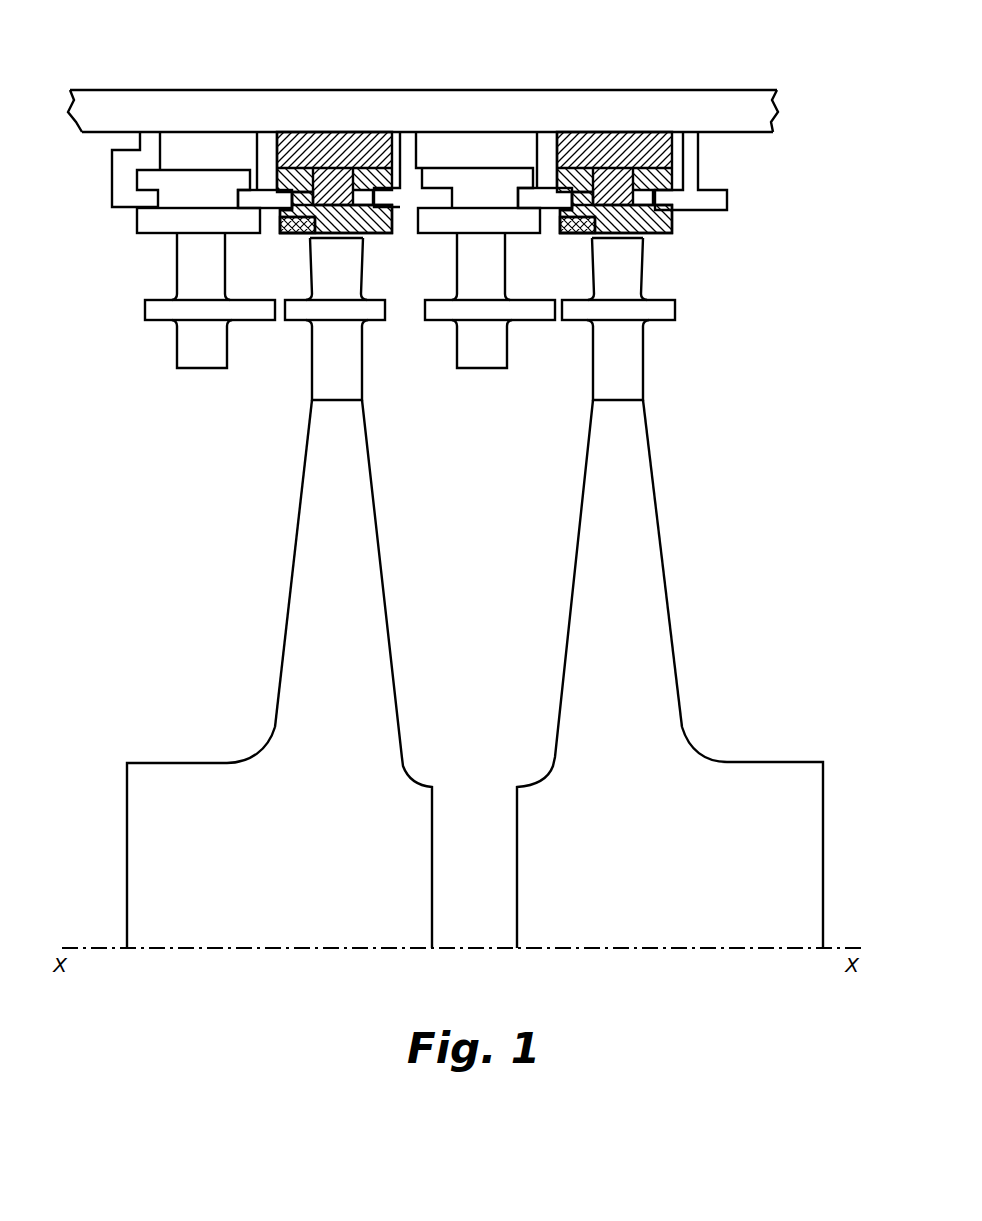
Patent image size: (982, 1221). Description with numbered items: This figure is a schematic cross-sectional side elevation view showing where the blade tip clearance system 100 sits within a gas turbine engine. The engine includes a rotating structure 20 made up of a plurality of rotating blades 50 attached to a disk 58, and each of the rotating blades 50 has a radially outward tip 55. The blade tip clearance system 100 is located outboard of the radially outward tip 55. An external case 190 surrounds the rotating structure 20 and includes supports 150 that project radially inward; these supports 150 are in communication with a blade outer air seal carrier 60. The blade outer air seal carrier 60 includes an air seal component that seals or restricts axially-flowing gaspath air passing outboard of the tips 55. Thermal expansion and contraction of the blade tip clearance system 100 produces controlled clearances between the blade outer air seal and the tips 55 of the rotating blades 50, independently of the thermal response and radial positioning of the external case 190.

The external case 190 is at (157, 107).
The supports 150 is at (260, 148).
The blade tip clearance system 100 is at (308, 148).
The radially outward tip 55 is at (305, 232).
The blade outer air seal carrier 60 is at (282, 235).
The rotating blades 50 is at (371, 287).
The rotating structure 20 is at (281, 603).
The disk 58 is at (297, 738).